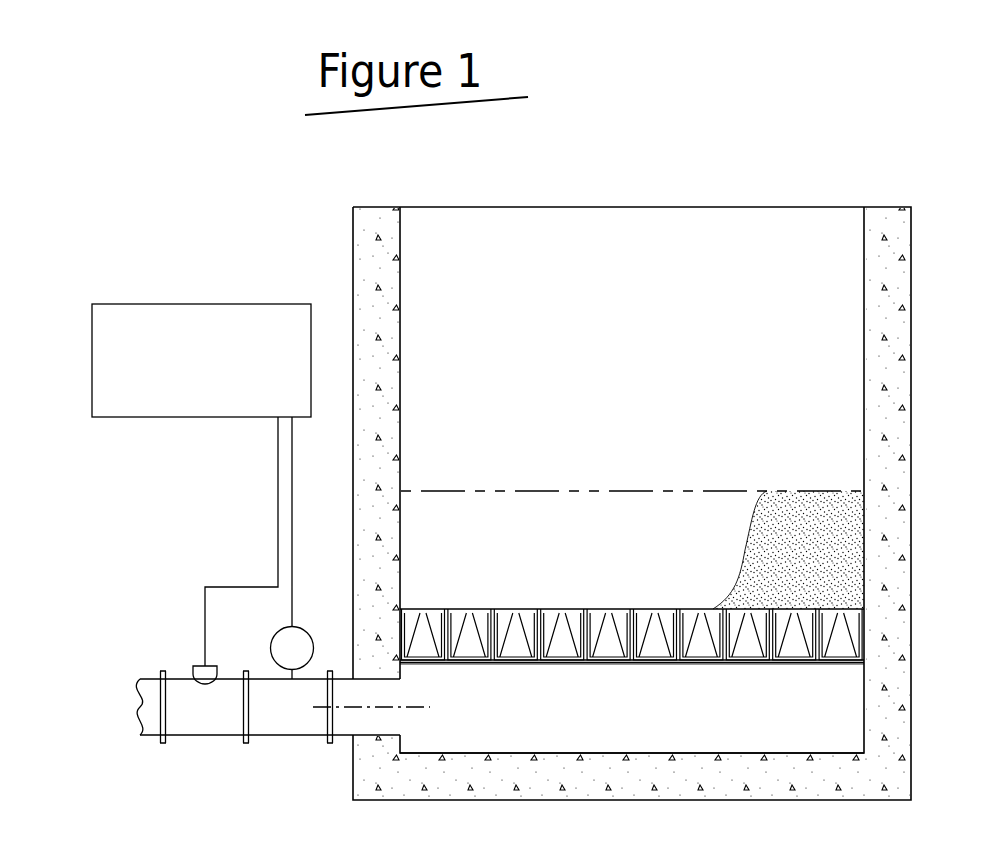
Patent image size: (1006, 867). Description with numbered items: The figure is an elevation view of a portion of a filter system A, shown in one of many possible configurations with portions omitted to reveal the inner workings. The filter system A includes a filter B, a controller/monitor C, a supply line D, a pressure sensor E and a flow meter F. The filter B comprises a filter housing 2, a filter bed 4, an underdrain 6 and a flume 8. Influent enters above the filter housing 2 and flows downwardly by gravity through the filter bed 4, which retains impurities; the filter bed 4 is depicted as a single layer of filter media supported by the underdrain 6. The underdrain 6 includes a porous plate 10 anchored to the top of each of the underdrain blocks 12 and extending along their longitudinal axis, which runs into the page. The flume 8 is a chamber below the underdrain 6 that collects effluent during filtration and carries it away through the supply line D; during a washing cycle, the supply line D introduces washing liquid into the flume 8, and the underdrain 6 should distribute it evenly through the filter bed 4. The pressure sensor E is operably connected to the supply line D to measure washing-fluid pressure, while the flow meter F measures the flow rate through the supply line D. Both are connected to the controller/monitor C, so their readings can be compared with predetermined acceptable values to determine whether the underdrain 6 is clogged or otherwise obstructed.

The filter system A is at (220, 193).
The filter B is at (932, 242).
The controller/monitor C is at (182, 358).
The supply line D is at (307, 735).
The pressure sensor E is at (282, 622).
The flow meter F is at (192, 662).
The filter housing 2 is at (897, 357).
The filter bed 4 is at (833, 545).
The underdrain 6 is at (702, 642).
The flume 8 is at (838, 718).
The porous plate 10 is at (561, 601).
The underdrain blocks 12 is at (563, 689).